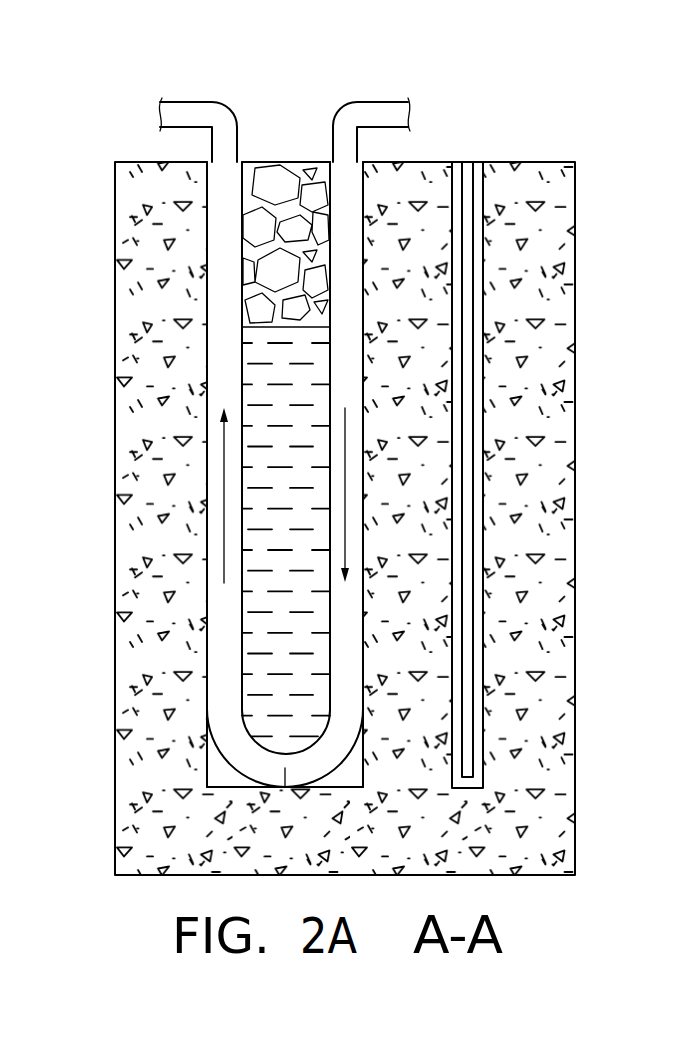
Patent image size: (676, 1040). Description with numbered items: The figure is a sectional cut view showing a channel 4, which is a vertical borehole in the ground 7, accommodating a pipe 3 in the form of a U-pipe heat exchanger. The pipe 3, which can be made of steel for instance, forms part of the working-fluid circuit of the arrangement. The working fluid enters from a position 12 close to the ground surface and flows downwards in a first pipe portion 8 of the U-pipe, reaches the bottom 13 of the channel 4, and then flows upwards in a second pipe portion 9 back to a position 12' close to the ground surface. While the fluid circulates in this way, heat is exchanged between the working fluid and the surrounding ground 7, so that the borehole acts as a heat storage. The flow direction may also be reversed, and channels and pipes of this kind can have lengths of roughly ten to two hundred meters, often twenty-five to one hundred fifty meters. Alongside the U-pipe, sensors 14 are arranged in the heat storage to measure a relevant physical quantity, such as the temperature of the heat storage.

The position close to the ground surface 12' is at (198, 99).
The position close to the ground surface 12 is at (371, 99).
The sensors 14 is at (467, 238).
The pipe 3 is at (182, 306).
The second pipe portion 9 is at (225, 365).
The first pipe portion 8 is at (347, 617).
The ground 7 is at (160, 657).
The channel 4 is at (212, 777).
The bottom of the channel 13 is at (285, 787).